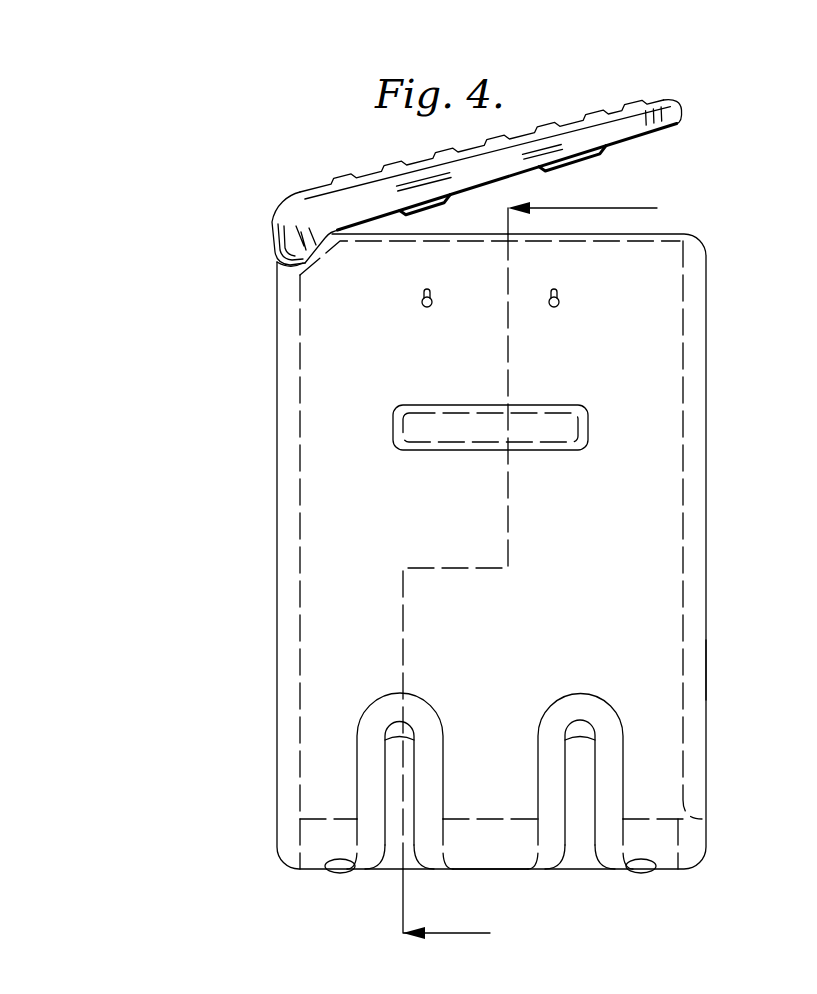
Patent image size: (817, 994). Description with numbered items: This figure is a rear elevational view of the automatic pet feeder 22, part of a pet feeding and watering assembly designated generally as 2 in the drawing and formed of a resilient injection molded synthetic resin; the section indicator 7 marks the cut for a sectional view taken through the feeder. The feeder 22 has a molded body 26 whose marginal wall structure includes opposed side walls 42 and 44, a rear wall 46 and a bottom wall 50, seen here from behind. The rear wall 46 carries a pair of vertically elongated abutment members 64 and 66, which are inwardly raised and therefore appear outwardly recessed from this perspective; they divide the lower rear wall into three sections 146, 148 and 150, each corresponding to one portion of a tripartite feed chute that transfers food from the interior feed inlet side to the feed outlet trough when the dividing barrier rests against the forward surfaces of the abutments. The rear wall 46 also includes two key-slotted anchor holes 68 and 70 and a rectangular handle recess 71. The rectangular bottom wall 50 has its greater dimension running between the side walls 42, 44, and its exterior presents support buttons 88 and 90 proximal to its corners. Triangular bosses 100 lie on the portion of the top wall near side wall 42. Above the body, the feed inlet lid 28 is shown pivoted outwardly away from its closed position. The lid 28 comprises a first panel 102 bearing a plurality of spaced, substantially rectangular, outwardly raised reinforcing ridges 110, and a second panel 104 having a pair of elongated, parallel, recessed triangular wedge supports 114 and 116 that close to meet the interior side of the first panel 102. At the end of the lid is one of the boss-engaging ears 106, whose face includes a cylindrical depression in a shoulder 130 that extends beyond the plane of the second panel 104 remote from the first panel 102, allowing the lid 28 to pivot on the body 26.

The fishing line spool storage device 2 is at (738, 505).
The section line 7- 7 is at (542, 571).
The automatic pet feeder 22 is at (816, 246).
The molded body 26 is at (672, 375).
The feed inlet lid 28 is at (647, 105).
The side wall 42 is at (705, 573).
The side wall 44 is at (277, 620).
The rear wall 46 is at (648, 620).
The bottom wall 50 is at (585, 870).
The abutment member 64 is at (400, 730).
The abutment member 66 is at (582, 730).
The key-slotted anchor hole 68 is at (420, 305).
The key-slotted anchor hole 70 is at (559, 303).
The rectangular handle recess 71 is at (532, 440).
The support button 88 is at (640, 874).
The support button 90 is at (338, 878).
The triangular boss 100 is at (323, 245).
The first panel 102 is at (527, 130).
The second panel 104 is at (507, 177).
The boss-engaging ear 106 is at (272, 222).
The reinforcing ridge 110 is at (403, 162).
The triangular wedge support 114 is at (425, 198).
The triangular wedge support 116 is at (520, 173).
The shoulder 130 is at (304, 265).
The chute section 146 is at (347, 842).
The chute section 148 is at (483, 850).
The chute section 150 is at (643, 835).